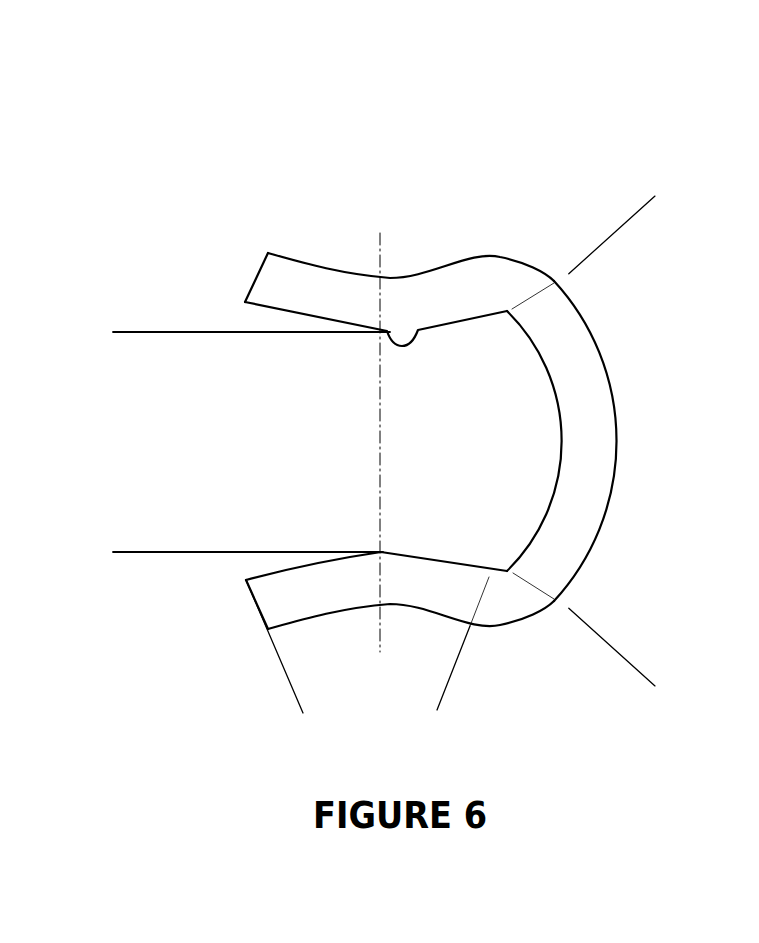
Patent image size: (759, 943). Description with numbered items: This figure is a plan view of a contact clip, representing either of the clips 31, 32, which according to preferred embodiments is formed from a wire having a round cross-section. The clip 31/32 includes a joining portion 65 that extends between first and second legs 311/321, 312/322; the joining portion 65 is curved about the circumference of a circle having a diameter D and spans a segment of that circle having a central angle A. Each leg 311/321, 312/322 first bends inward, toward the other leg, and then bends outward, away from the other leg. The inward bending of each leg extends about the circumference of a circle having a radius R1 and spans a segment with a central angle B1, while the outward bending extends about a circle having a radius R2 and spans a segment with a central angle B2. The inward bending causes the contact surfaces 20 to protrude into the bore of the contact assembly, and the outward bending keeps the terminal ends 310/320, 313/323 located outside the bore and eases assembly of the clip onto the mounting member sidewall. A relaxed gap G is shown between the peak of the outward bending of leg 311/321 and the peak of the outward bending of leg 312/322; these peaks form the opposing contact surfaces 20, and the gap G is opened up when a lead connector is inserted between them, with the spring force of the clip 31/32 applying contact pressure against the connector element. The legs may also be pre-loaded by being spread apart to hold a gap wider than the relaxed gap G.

The clip 31 is at (360, 372).
The clip 32 is at (515, 147).
The terminal end 310 is at (264, 224).
The terminal end 320 is at (258, 272).
The first leg 311 is at (411, 192).
The first leg 321 is at (341, 290).
The second leg 312 is at (315, 580).
The second leg 322 is at (357, 578).
The terminal end 313 is at (212, 641).
The terminal end 323 is at (252, 600).
The joining portion 65 is at (577, 351).
The contact surface 20 is at (427, 300).
The relaxed gap G is at (125, 332).
The diameter D is at (210, 359).
The central angle A is at (648, 203).
The central angle B1 is at (598, 635).
The central angle B2 is at (442, 697).
The radius R1 is at (507, 313).
The radius R2 is at (397, 331).